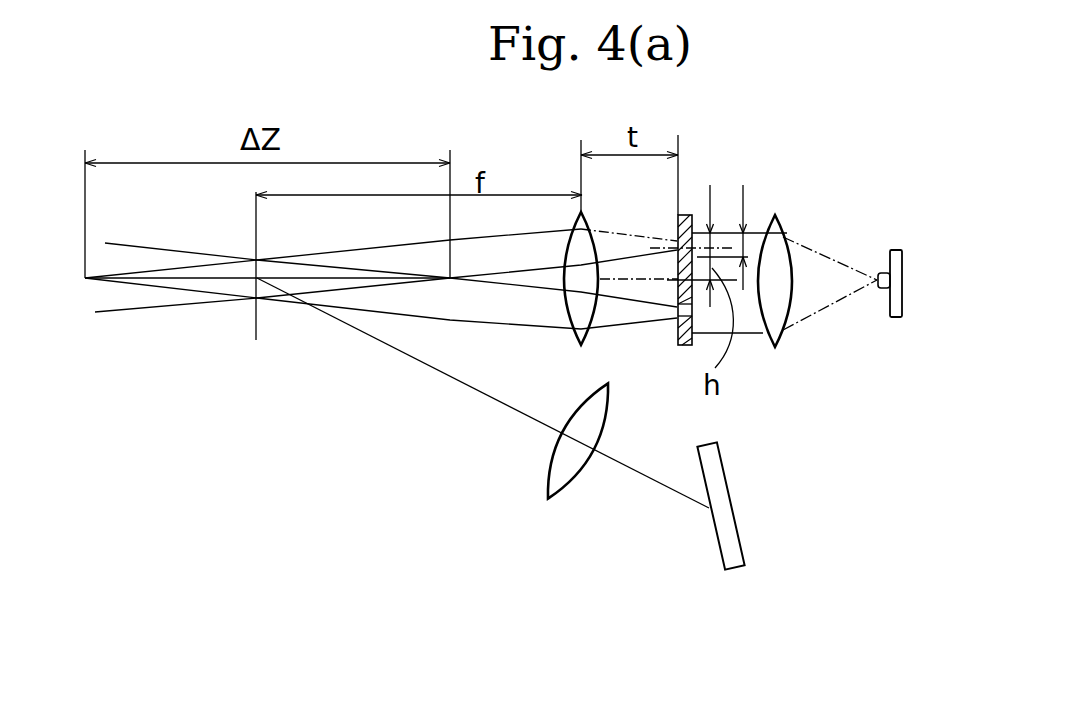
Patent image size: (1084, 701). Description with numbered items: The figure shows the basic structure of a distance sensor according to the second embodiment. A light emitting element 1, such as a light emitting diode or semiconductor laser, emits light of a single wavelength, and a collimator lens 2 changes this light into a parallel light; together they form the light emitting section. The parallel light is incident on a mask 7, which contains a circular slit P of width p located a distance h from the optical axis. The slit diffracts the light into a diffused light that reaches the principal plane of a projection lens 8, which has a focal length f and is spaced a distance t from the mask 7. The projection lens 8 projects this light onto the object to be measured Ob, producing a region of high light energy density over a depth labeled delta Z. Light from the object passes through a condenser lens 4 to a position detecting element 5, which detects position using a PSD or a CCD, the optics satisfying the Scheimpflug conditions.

The light emitting element 1 is at (897, 250).
The collimator lens 2 is at (785, 233).
The condenser lens 4 is at (570, 490).
The position detecting element 5 is at (733, 572).
The mask 7 is at (680, 215).
The projection lens 8 is at (585, 220).
The object to be measured Ob is at (256, 338).
The circular slit P is at (748, 247).